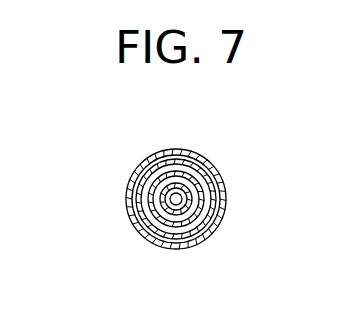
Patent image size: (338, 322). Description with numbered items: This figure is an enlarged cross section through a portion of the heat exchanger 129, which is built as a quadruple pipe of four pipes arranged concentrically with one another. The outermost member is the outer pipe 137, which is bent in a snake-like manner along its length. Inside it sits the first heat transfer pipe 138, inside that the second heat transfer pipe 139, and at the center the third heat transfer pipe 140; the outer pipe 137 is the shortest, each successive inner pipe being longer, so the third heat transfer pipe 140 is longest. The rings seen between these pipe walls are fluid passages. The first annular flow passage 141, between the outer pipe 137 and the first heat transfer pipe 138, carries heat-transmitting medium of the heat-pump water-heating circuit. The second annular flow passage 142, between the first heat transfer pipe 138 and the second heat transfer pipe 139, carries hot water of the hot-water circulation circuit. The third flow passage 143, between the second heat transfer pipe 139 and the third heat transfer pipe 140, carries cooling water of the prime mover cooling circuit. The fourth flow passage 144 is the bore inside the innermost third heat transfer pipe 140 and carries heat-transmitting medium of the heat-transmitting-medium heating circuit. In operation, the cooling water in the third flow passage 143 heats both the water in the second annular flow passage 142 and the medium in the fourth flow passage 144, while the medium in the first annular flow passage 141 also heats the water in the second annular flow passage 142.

The heat exchanger 129 is at (130, 168).
The outer pipe 137 is at (211, 156).
The first heat transfer pipe 138 is at (220, 184).
The second heat transfer pipe 139 is at (210, 208).
The third heat transfer pipe 140 is at (209, 218).
The first annular flow passage 141 is at (171, 247).
The second annular flow passage 142 is at (158, 230).
The third flow passage 143 is at (150, 214).
The fourth flow passage 144 is at (176, 199).